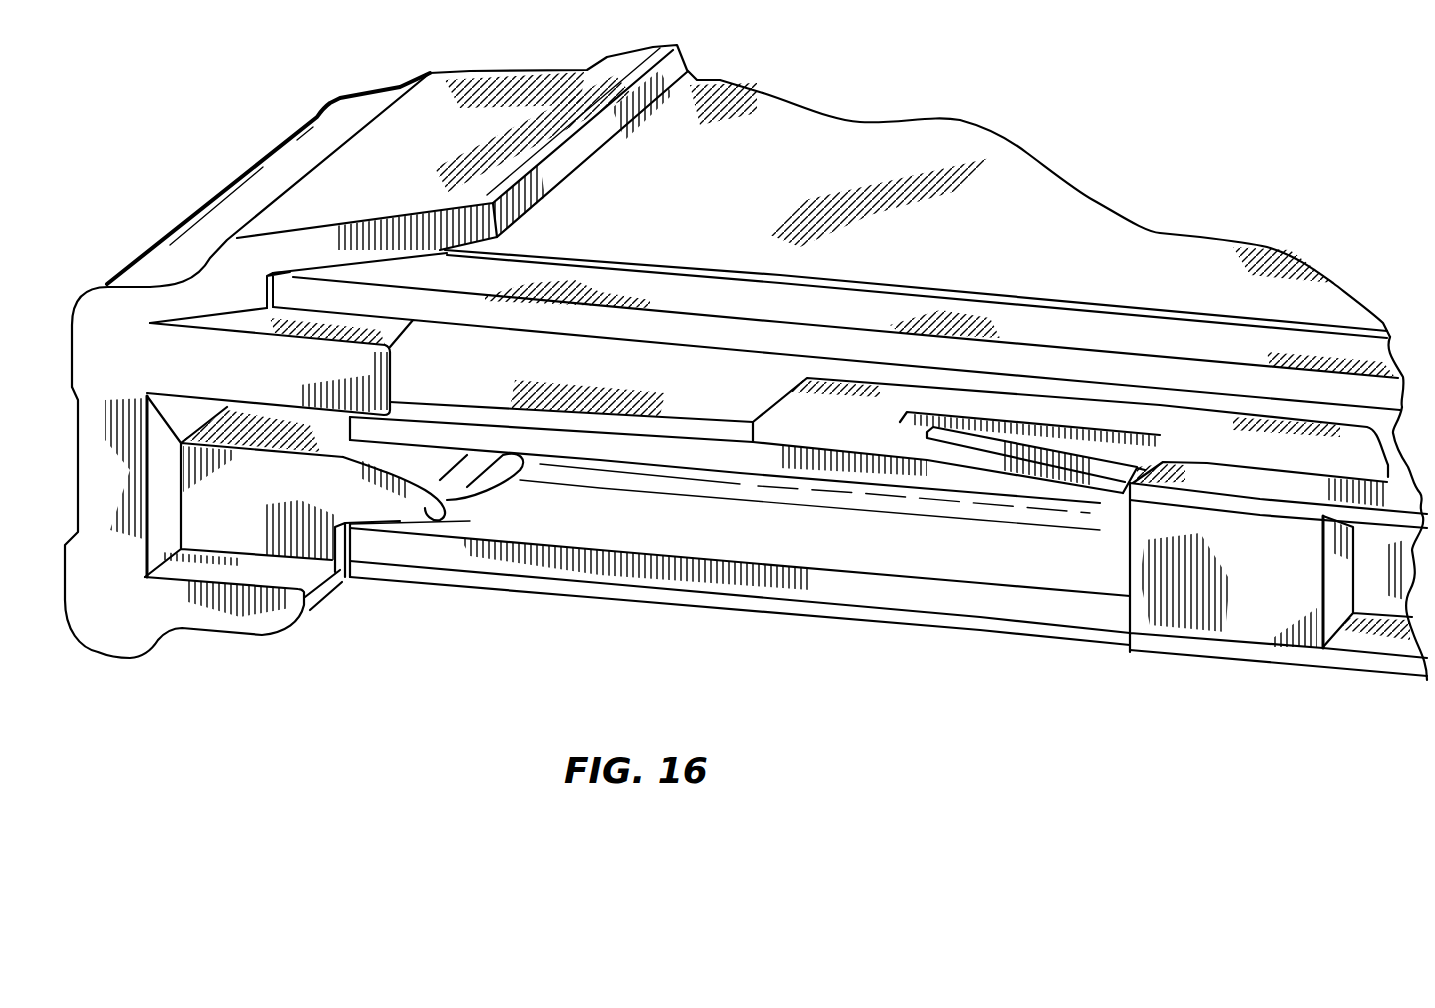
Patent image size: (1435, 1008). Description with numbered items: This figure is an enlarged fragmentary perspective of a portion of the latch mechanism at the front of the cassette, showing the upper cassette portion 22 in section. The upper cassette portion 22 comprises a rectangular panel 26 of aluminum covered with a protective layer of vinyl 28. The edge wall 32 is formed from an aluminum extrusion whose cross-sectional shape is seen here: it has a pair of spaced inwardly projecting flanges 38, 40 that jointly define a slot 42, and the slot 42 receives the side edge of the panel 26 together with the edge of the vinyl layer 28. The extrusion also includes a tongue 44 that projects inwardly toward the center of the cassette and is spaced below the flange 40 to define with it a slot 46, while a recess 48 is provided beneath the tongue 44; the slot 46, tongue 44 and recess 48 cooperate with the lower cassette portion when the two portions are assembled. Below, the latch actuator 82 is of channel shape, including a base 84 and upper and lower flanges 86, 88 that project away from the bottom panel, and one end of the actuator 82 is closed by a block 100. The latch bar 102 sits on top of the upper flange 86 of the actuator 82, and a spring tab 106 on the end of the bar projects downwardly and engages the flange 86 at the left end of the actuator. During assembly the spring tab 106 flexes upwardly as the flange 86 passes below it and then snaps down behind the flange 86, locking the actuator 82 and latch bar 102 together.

The upper cassette portion 22 is at (938, 100).
The rectangular panel 26 is at (655, 290).
The layer of vinyl 28 is at (1100, 215).
The edge wall 32 is at (235, 188).
The flange 38 is at (522, 75).
The flange 40 is at (460, 325).
The slot 42 is at (293, 275).
The tongue 44 is at (430, 510).
The slot 46 is at (272, 420).
The recess 48 is at (350, 542).
The latch actuator 82 is at (1390, 645).
The base 84 is at (1372, 548).
The upper flange 86 is at (1240, 502).
The lower flange 88 is at (1162, 644).
The block 100 is at (1240, 623).
The latch bar 102 is at (795, 395).
The spring tab 106 is at (1107, 492).